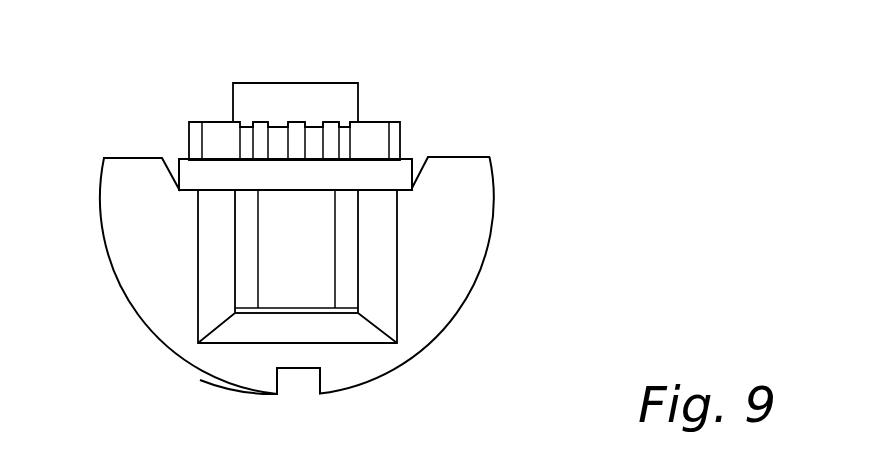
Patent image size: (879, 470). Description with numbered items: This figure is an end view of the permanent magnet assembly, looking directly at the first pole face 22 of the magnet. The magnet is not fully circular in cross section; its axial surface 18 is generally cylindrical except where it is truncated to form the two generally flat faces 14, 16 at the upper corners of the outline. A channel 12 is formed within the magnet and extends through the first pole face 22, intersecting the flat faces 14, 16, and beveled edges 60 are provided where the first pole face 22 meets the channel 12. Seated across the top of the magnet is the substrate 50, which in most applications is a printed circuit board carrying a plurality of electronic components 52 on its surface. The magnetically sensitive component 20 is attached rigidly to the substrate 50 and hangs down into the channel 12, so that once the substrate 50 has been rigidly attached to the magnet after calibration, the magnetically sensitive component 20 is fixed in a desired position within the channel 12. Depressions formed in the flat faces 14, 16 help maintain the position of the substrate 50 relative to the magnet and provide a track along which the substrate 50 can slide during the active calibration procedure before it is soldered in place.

The channel 12 is at (250, 262).
The flat face 14 is at (468, 157).
The flat face 16 is at (127, 158).
The axial surface 18 is at (217, 378).
The magnetically sensitive component 20 is at (308, 265).
The first pole face 22 is at (118, 223).
The substrate 50 is at (405, 167).
The electronic components 52 is at (372, 128).
The beveled edges 60 is at (328, 333).